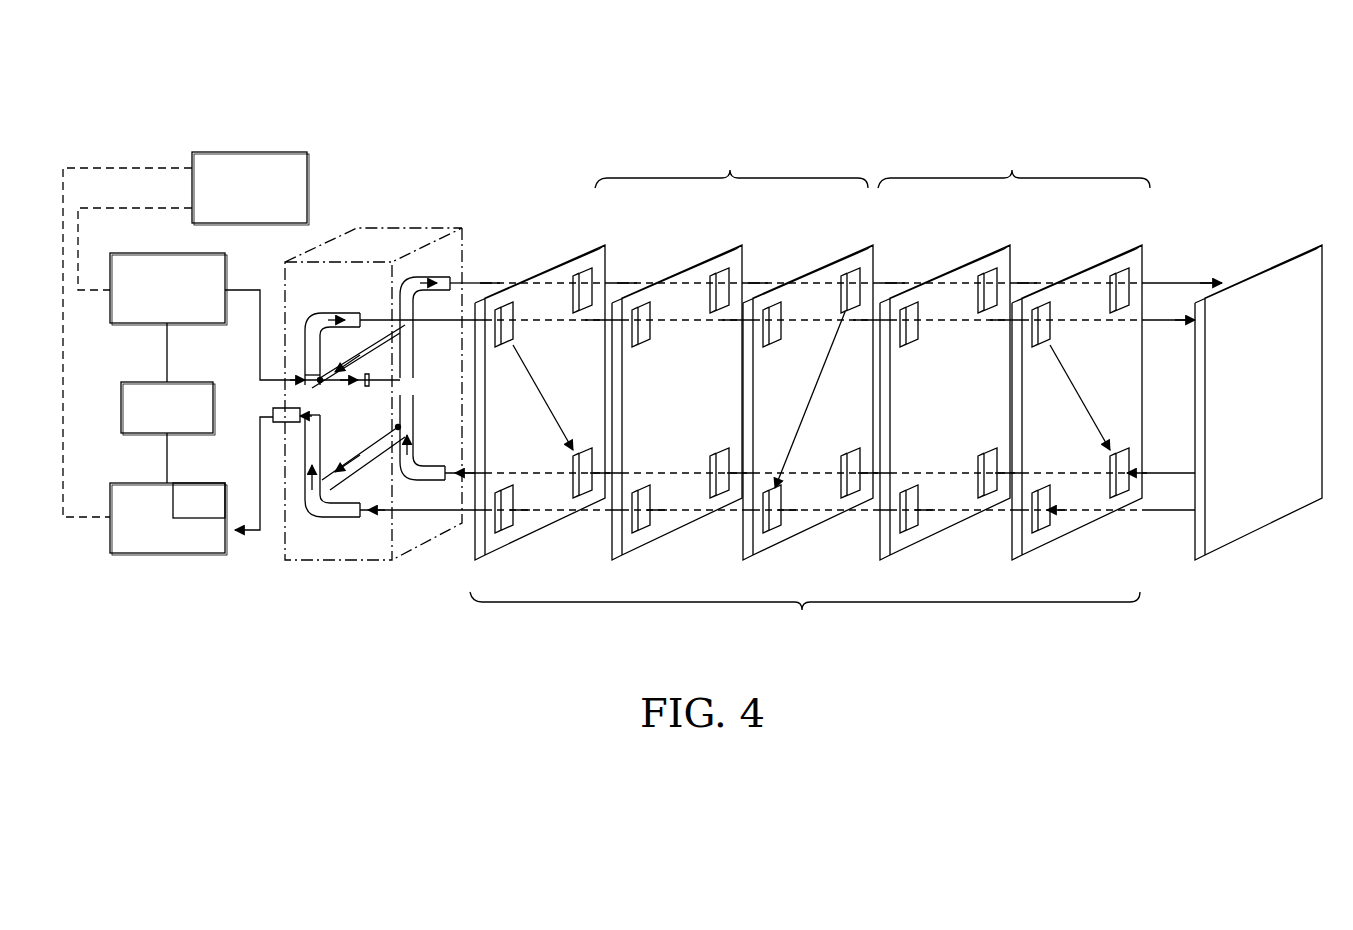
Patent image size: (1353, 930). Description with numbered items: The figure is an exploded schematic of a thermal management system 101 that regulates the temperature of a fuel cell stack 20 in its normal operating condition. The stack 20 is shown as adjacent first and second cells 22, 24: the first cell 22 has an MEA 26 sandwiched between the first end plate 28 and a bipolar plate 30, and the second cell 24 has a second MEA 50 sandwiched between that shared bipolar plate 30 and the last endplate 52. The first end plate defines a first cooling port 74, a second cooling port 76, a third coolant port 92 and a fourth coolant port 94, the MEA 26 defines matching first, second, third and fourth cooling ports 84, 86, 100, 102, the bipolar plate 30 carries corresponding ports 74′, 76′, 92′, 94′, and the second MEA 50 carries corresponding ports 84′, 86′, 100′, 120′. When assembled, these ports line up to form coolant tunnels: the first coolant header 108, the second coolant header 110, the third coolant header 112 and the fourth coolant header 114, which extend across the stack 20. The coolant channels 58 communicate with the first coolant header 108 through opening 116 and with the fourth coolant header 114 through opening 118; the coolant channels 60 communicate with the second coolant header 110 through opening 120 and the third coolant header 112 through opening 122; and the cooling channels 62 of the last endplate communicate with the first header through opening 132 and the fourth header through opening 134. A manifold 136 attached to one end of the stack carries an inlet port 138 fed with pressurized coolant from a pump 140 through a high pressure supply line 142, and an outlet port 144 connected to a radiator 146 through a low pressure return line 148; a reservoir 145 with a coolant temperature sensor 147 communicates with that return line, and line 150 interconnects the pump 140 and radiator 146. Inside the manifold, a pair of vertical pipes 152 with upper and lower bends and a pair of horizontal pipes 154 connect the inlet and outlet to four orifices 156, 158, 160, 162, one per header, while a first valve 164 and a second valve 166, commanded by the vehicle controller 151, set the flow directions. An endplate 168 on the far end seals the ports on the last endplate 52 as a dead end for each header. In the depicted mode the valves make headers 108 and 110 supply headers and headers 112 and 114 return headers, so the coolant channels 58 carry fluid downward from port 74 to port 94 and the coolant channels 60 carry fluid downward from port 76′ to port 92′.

The thermal management system 101 is at (1135, 78).
The vehicle controller 151 is at (245, 152).
The pump 140 is at (165, 253).
The radiator 146 is at (121, 405).
The reservoir 145 is at (110, 500).
The coolant temperature sensor 147 is at (199, 500).
The line 150 is at (167, 370).
The high pressure supply line 142 is at (260, 368).
The outlet port 144 is at (273, 410).
The low pressure return line 148 is at (260, 475).
The manifold 136 is at (398, 230).
The second valve 166 is at (308, 380).
The orifice 156 is at (352, 315).
The orifice 158 is at (448, 282).
The vertical pipes 152 is at (410, 376).
The inlet port 138 is at (358, 378).
The first valve 164 is at (405, 392).
The orifice 162 is at (442, 466).
The orifice 160 is at (355, 520).
The horizontal pipes 154 is at (330, 483).
The first cell 22 is at (731, 168).
The second cell 24 is at (1014, 168).
The fuel cell stack 20 is at (805, 614).
The first end plate 28 is at (567, 383).
The MEA 26 is at (677, 383).
The bipolar plate 30 is at (837, 383).
The second MEA 50 is at (945, 385).
The last endplate 52 is at (1101, 383).
The endplate 168 is at (1310, 245).
The first cooling port 74 is at (513, 332).
The second cooling port 76 is at (573, 290).
The fourth coolant port 94 is at (573, 455).
The third coolant port 92 is at (513, 513).
The coolant channels 58 is at (545, 385).
The opening 116 is at (505, 352).
The opening 118 is at (580, 450).
The first coolant header 108 is at (528, 322).
The second coolant header 110 is at (610, 282).
The third coolant header 112 is at (598, 513).
The first cooling port 84 is at (640, 352).
The second cooling port 86 is at (710, 290).
The fourth cooling port 102 is at (712, 450).
The third cooling port 100 is at (650, 513).
The first inlet port of third plate 74′ is at (776, 352).
The second cooling port 76′ is at (841, 290).
The first outlet port of third plate 94′ is at (848, 450).
The third coolant port 92′ is at (781, 513).
The opening 122 is at (770, 485).
The coolant channels 60 is at (808, 418).
The opening 120 is at (862, 318).
The pass-through port 84′ is at (908, 352).
The pass-through port 86′ is at (978, 290).
The pass-through port 120′ is at (980, 450).
The pass-through port 100′ is at (918, 513).
The cooling channels 62 is at (1080, 388).
The opening 132 is at (1042, 352).
The opening 134 is at (1117, 450).
The fourth coolant header 114 is at (1160, 473).